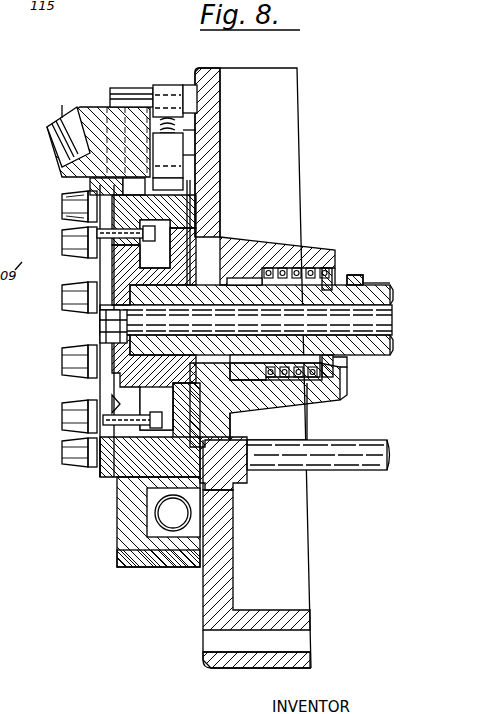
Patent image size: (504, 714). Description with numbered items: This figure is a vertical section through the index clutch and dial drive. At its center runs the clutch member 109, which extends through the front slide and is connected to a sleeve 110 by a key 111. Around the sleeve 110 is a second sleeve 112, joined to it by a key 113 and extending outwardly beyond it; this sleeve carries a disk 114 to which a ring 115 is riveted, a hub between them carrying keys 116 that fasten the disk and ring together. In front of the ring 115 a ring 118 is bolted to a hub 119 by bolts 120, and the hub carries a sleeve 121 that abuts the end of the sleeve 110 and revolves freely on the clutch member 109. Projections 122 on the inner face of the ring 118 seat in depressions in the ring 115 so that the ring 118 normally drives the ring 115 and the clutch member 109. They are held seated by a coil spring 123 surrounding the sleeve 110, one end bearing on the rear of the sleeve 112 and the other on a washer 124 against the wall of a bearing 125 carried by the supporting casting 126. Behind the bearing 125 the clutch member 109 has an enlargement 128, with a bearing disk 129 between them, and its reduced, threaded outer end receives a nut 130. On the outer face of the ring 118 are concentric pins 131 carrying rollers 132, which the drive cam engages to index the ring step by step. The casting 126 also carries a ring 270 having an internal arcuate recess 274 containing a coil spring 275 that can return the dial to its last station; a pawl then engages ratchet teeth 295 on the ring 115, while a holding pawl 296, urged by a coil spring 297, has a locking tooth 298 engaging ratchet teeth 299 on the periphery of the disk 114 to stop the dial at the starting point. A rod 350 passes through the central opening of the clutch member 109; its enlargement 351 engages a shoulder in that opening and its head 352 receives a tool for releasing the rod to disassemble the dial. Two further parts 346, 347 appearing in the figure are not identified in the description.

The clutch member 109 is at (372, 290).
The sleeve 110 is at (300, 265).
The key 111 is at (312, 378).
The sleeve 112 is at (238, 276).
The key 113 is at (262, 262).
The disk 114 is at (212, 213).
The ring 115 is at (110, 190).
The keys 116 is at (152, 172).
The ring 118 is at (110, 475).
The hub 119 is at (110, 455).
The bolts 120 is at (108, 410).
The sleeve 121 is at (225, 385).
The projections 122 is at (135, 150).
The coil spring 123 is at (326, 262).
The washer 124 is at (342, 388).
The bearing 125 is at (338, 400).
The supporting casting 126 is at (205, 92).
The enlargement 128 is at (350, 272).
The bearing disk 129 is at (345, 372).
The nut 130 is at (125, 290).
The pins 131 is at (60, 235).
The rollers 132 is at (78, 228).
The ring 270 is at (118, 517).
The arcuate recess 274 is at (160, 513).
The coil spring 275 is at (173, 530).
The ratchet teeth 295 is at (138, 168).
The holding pawl 296 is at (183, 142).
The coil spring 297 is at (196, 118).
The locking tooth 298 is at (196, 185).
The ratchet teeth 299 is at (206, 170).
The wedge 346 is at (55, 143).
The edge 347 is at (55, 104).
The rod 350 is at (100, 320).
The enlargement 351 is at (106, 328).
The head 352 is at (98, 338).